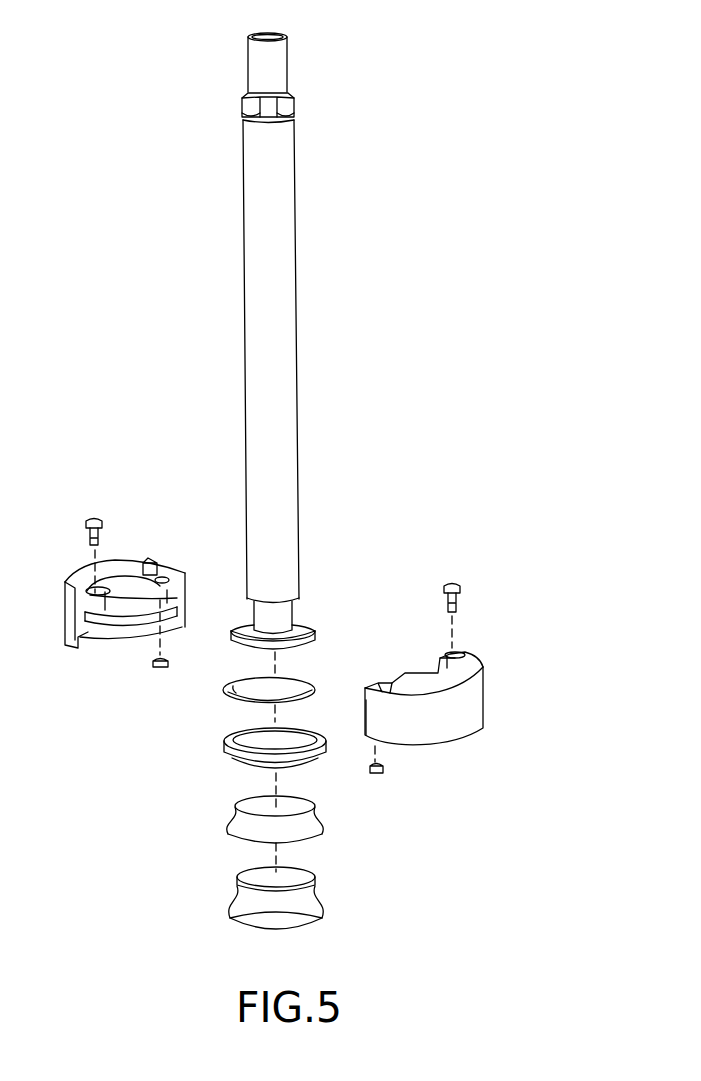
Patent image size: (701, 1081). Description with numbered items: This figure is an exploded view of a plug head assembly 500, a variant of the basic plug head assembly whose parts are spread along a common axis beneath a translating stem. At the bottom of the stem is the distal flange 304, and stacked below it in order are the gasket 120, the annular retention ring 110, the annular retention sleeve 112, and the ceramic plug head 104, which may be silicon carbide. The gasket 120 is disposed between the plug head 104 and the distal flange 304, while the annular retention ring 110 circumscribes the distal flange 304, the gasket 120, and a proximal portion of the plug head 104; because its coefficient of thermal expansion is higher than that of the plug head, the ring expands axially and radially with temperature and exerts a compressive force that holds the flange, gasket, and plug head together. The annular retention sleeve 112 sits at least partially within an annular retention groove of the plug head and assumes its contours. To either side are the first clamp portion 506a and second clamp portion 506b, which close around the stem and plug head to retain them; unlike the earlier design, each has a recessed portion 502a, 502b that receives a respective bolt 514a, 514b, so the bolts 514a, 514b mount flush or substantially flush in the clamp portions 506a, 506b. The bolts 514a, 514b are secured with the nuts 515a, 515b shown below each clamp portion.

The plug head assembly 500 is at (362, 143).
The distal flange 304 is at (310, 620).
The gasket 120 is at (272, 693).
The annular retention ring 110 is at (282, 764).
The annular retention sleeve 112 is at (295, 828).
The plug head 104 is at (282, 913).
The recessed portion 502a is at (382, 681).
The recessed portion 502b is at (182, 567).
The first clamp portion 506a is at (487, 672).
The second clamp portion 506b is at (147, 577).
The bolt 514a is at (458, 584).
The bolt 514b is at (104, 516).
The nut 515a is at (383, 774).
The nut 515b is at (160, 668).